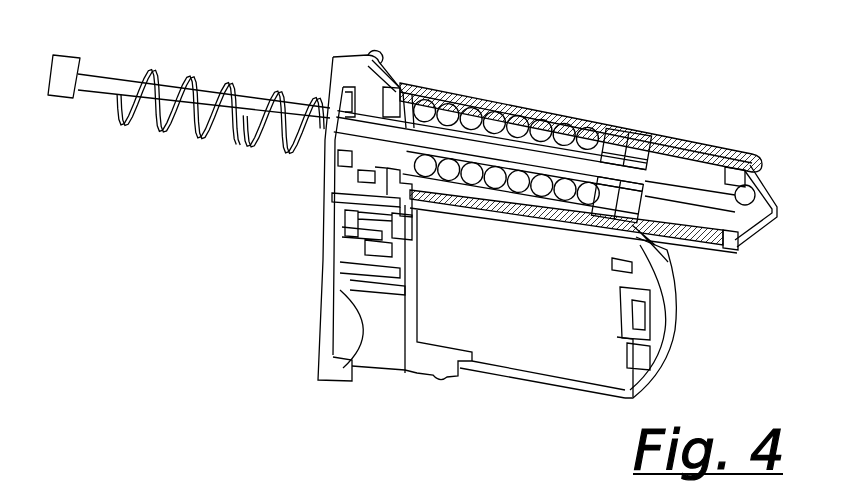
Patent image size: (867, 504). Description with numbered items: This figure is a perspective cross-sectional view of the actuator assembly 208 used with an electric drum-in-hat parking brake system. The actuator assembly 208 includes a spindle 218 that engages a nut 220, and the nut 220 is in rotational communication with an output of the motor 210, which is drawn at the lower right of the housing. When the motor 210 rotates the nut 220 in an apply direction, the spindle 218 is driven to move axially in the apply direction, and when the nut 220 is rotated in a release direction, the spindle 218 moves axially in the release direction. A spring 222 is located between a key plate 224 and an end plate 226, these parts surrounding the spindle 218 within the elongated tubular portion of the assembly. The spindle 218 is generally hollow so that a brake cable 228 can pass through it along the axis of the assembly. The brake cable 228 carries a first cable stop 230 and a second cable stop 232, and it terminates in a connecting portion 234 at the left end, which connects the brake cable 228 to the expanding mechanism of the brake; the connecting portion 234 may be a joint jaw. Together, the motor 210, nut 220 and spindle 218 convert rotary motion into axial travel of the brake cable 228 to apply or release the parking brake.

The actuator assembly 208 is at (540, 110).
The motor 210 is at (622, 315).
The spindle 218 is at (465, 147).
The nut 220 is at (370, 167).
The spring 222 is at (577, 150).
The key plate 224 is at (412, 120).
The end plate 226 is at (604, 158).
The brake cable 228 is at (161, 97).
The first cable stop 230 is at (243, 98).
The second cable stop 232 is at (625, 200).
The connecting portion 234 is at (60, 92).